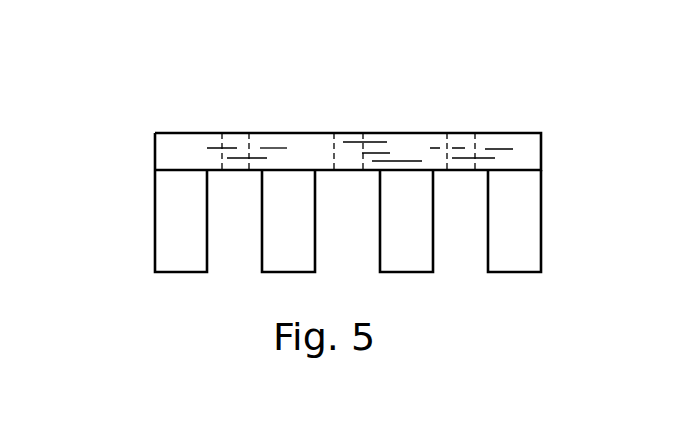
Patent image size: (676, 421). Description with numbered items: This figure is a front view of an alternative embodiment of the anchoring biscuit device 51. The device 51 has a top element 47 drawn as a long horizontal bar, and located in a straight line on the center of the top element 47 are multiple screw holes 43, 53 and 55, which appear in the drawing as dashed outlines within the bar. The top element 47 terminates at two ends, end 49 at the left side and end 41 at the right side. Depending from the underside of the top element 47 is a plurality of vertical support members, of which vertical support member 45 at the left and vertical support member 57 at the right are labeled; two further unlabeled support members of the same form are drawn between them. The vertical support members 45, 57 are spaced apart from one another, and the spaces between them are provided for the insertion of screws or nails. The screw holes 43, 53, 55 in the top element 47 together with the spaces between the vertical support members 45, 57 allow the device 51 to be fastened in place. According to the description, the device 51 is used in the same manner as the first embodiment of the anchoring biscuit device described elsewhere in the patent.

The end 41 is at (541, 155).
The screw hole 43 is at (341, 135).
The vertical support member 45 is at (170, 205).
The top element 47 is at (418, 135).
The end 49 is at (155, 152).
The anchoring biscuit device 51 is at (176, 99).
The screw hole 53 is at (235, 133).
The screw hole 55 is at (452, 135).
The vertical support member 57 is at (534, 228).